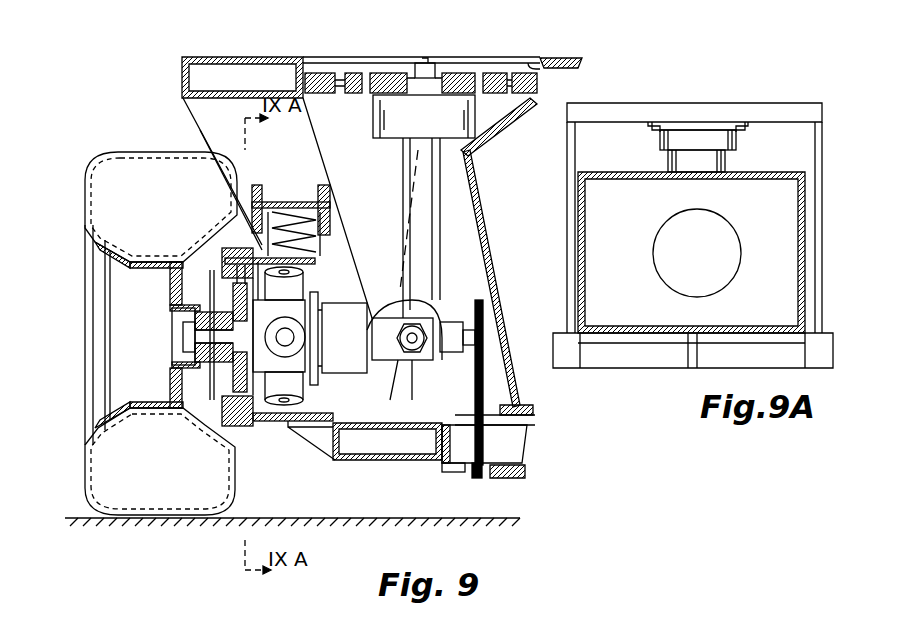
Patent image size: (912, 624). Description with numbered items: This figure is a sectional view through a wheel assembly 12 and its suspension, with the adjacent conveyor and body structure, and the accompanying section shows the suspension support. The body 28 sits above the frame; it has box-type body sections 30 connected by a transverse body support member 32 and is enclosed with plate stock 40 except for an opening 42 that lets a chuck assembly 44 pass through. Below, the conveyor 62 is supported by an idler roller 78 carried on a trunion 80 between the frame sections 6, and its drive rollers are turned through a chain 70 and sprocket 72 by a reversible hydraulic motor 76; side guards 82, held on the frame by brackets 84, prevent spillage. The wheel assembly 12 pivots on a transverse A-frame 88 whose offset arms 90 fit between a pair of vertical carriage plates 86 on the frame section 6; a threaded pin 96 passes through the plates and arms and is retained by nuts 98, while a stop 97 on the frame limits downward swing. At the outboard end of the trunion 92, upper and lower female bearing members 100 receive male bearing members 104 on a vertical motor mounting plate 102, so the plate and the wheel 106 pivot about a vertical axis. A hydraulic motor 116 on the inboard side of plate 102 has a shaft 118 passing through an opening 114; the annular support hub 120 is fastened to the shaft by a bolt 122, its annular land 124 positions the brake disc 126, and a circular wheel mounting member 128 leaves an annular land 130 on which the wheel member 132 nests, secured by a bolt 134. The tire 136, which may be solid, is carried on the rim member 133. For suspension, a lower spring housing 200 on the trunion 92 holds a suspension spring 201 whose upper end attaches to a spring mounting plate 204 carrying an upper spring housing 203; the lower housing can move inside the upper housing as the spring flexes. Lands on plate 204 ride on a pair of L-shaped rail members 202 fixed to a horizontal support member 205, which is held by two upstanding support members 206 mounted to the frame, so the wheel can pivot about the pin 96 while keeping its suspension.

In FIG. 9, the frame section 6 is at (384, 460).
In FIG. 9A, the frame section 6 is at (605, 346).
In FIG. 9, the wheel assembly 12 is at (152, 314).
In FIG. 9, the body 28 is at (568, 58).
In FIG. 9, the body section 30 is at (268, 57).
In FIG. 9, the transverse body support member 32 is at (526, 442).
In FIG. 9, the plate stock 40 is at (582, 59).
In FIG. 9, the opening 42 is at (536, 61).
In FIG. 9, the chuck assembly 44 is at (432, 62).
In FIG. 9, the conveyor 62 is at (524, 405).
In FIG. 9, the chain 70 is at (494, 367).
In FIG. 9, the sprocket 72 is at (482, 478).
In FIG. 9, the reversible hydraulic motor 76 is at (456, 320).
In FIG. 9, the idler roller 78 is at (510, 422).
In FIG. 9, the trunion 80 is at (455, 472).
In FIG. 9, the side guard 82 is at (482, 172).
In FIG. 9, the bracket 84 is at (396, 286).
In FIG. 9, the carriage plate 86 is at (476, 376).
In FIG. 9, the A-frame 88 is at (372, 316).
In FIG. 9, the arm 90 is at (426, 310).
In FIG. 9A, the arm 90 is at (584, 262).
In FIG. 9, the trunion 92 is at (288, 426).
In FIG. 9A, the trunion 92 is at (680, 179).
In FIG. 9, the pin 96 is at (400, 357).
In FIG. 9, the stop 97 is at (324, 437).
In FIG. 9A, the stop 97 is at (671, 360).
In FIG. 9, the nut 98 is at (415, 370).
In FIG. 9, the female bearing member 100 is at (248, 240).
In FIG. 9, the motor mounting plate 102 is at (304, 280).
In FIG. 9, the male bearing member 104 is at (302, 268).
In FIG. 9, the wheel 106 is at (84, 500).
In FIG. 9, the opening 114 is at (250, 303).
In FIG. 9, the hydraulic motor 116 is at (326, 303).
In FIG. 9A, the hydraulic motor 116 is at (726, 222).
In FIG. 9, the shaft 118 is at (208, 302).
In FIG. 9, the annular support hub 120 is at (190, 328).
In FIG. 9, the bolt 122 is at (192, 348).
In FIG. 9, the annular land 124 is at (174, 372).
In FIG. 9, the brake disc 126 is at (180, 413).
In FIG. 9, the wheel mounting member 128 is at (180, 262).
In FIG. 9, the annular land 130 is at (172, 312).
In FIG. 9, the wheel member 132 is at (118, 394).
In FIG. 9, the rim member 133 is at (125, 232).
In FIG. 9, the bolt 134 is at (170, 304).
In FIG. 9, the tire 136 is at (106, 145).
In FIG. 9, the lower spring housing 200 is at (320, 225).
In FIG. 9A, the lower spring housing 200 is at (728, 160).
In FIG. 9, the suspension spring 201 is at (292, 188).
In FIG. 9A, the L-shaped rail member 202 is at (650, 130).
In FIG. 9, the upper spring housing 203 is at (332, 214).
In FIG. 9A, the upper spring housing 203 is at (660, 143).
In FIG. 9, the spring mounting plate 204 is at (250, 250).
In FIG. 9A, the spring mounting plate 204 is at (700, 125).
In FIG. 9, the horizontal support member 205 is at (330, 205).
In FIG. 9A, the horizontal support member 205 is at (778, 103).
In FIG. 9, the upstanding support member 206 is at (387, 441).
In FIG. 9A, the upstanding support member 206 is at (566, 264).